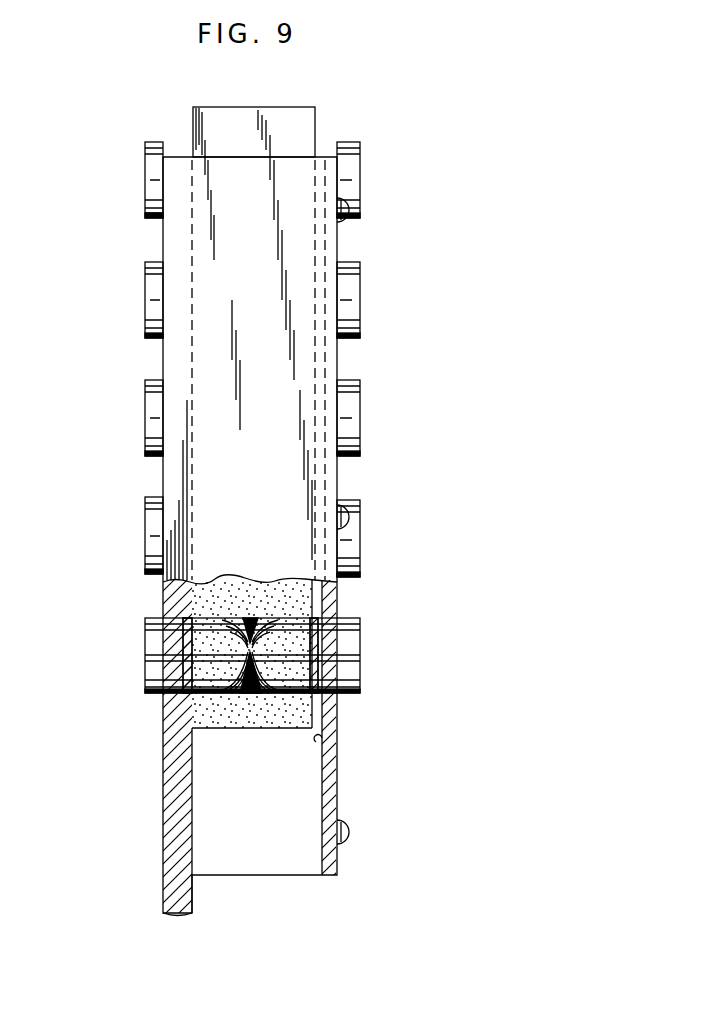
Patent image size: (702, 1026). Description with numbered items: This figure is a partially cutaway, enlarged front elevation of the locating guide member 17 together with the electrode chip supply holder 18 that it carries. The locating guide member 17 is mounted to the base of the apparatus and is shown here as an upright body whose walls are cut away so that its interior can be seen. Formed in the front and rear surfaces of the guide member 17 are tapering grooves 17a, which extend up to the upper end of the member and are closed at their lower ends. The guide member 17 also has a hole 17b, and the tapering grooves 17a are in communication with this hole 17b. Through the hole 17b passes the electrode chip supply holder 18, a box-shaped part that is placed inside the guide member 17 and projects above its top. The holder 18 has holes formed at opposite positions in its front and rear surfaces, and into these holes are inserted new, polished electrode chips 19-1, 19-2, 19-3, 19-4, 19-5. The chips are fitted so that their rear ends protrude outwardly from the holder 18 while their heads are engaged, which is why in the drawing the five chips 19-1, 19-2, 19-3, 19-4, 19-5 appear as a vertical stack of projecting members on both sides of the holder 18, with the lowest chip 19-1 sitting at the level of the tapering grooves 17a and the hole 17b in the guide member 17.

The locating guide member 17 is at (330, 772).
The tapering grooves 17a is at (165, 602).
The hole 17b is at (316, 742).
The electrode chip supply holder 18 is at (308, 123).
The electrode chip 19-1 is at (155, 660).
The electrode chip 19-2 is at (152, 537).
The electrode chip 19-3 is at (150, 420).
The electrode chip 19-4 is at (152, 301).
The electrode chip 19-5 is at (152, 181).